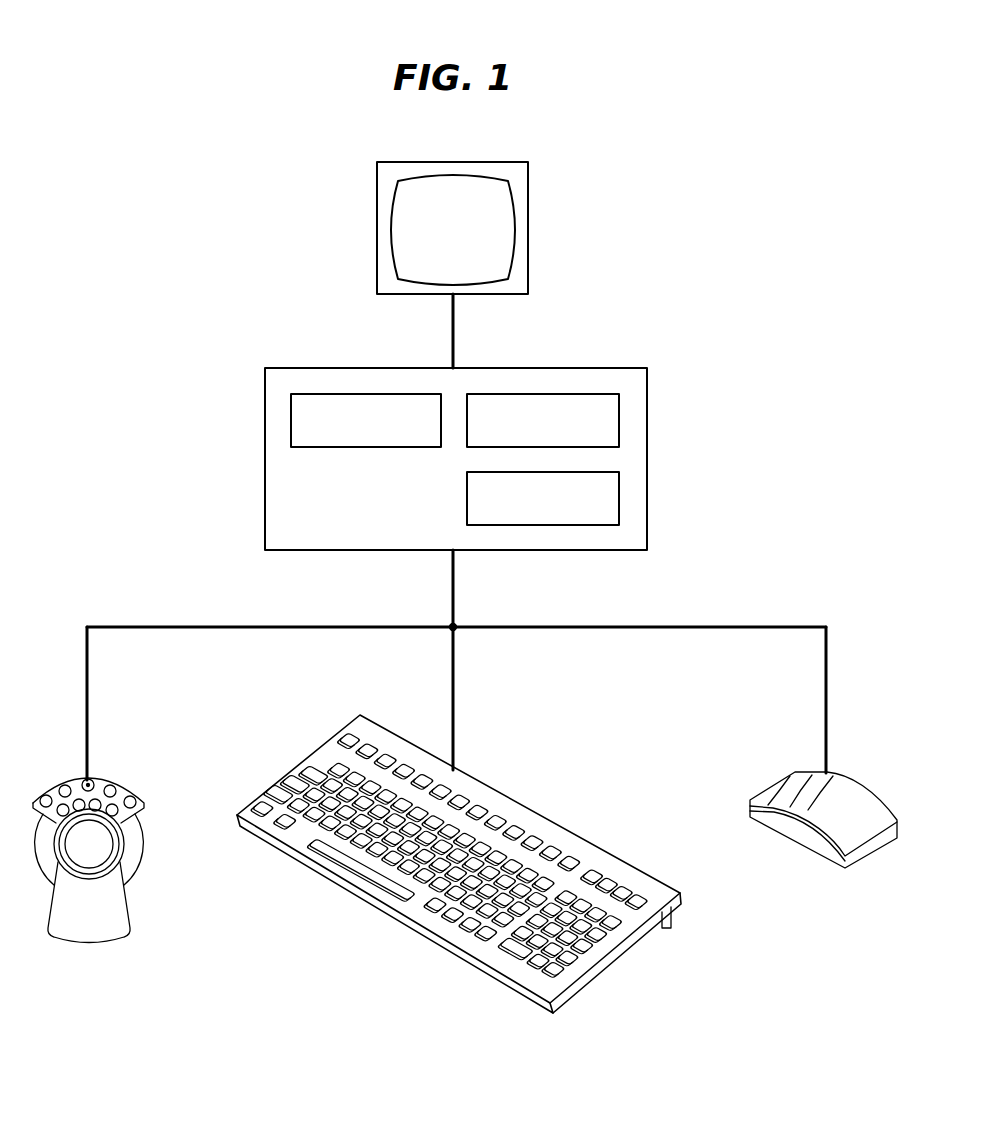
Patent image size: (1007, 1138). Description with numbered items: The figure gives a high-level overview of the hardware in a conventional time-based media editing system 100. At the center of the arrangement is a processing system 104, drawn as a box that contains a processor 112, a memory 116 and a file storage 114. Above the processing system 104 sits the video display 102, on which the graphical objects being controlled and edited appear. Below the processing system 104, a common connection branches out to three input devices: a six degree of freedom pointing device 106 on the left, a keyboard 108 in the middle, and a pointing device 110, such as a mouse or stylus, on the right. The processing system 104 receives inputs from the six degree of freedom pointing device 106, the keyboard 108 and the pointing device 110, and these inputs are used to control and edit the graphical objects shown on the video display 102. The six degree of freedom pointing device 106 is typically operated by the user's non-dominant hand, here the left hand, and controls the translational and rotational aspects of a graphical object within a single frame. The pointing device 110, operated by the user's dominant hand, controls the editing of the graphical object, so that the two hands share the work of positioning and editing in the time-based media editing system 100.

The time-based media editing system 100 is at (156, 196).
The video display 102 is at (528, 181).
The processing system 104 is at (588, 367).
The six degree of freedom (6DF) pointing device 106 is at (120, 786).
The keyboard 108 is at (560, 828).
The pointing device 110 is at (877, 802).
The processor 112 is at (290, 421).
The file storage 114 is at (620, 498).
The memory 116 is at (620, 418).